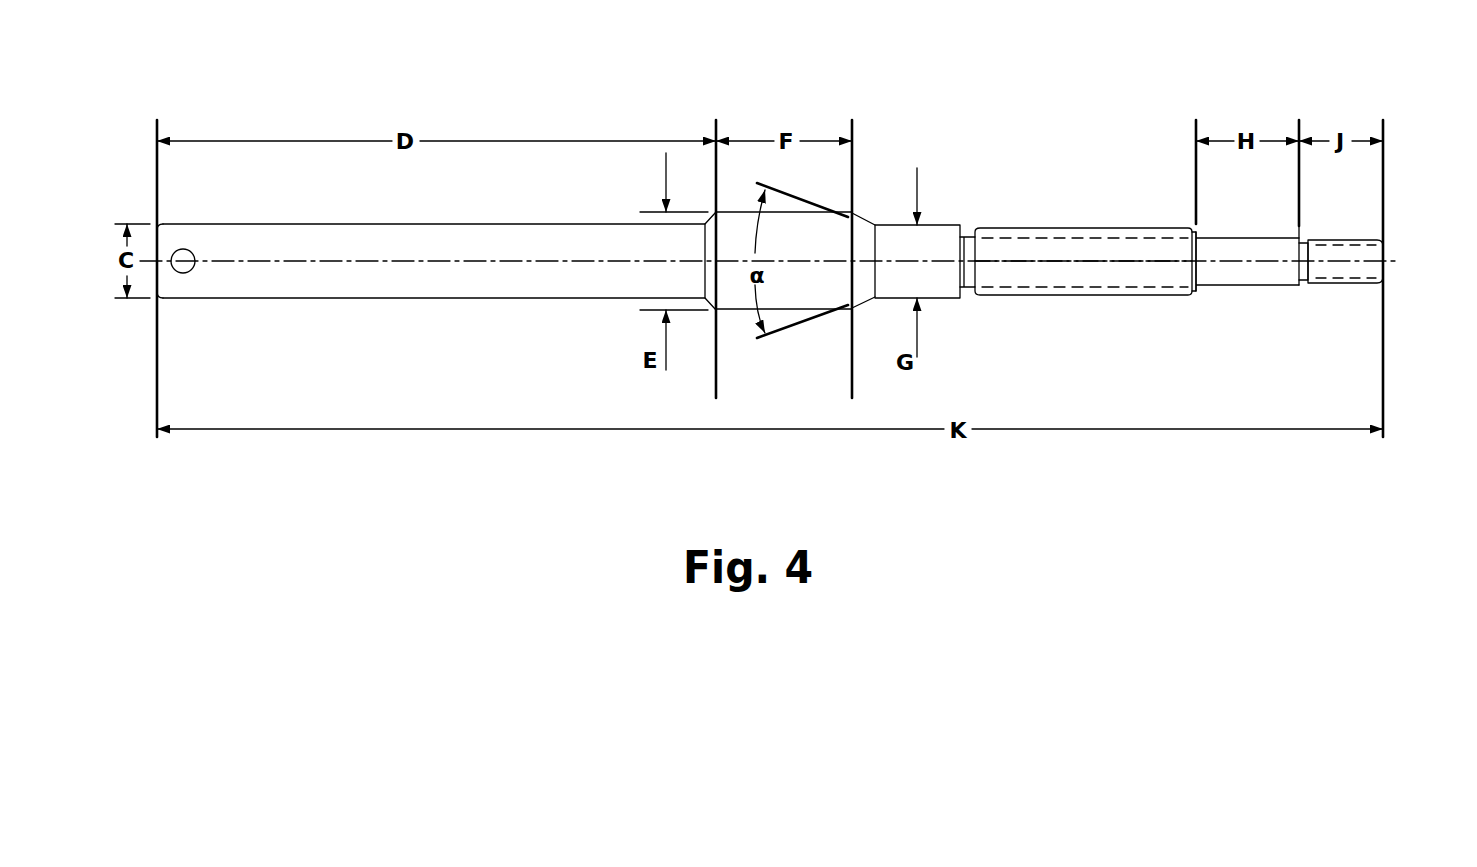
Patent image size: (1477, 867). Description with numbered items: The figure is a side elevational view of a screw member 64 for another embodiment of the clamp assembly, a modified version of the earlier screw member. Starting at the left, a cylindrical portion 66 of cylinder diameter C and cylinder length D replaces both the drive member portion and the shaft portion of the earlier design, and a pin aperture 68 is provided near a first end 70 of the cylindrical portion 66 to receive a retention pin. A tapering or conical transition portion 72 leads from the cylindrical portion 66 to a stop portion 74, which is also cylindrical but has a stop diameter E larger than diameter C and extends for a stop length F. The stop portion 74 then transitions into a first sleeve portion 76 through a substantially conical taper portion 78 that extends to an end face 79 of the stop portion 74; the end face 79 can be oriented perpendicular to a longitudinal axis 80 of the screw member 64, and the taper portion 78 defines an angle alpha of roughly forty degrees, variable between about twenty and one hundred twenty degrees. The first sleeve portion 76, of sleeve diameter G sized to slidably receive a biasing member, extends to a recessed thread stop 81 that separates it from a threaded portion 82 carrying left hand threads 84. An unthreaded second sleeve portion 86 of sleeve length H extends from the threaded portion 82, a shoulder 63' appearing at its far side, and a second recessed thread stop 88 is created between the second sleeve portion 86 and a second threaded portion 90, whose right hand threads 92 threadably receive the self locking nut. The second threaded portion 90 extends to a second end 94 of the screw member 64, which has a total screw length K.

The screw member 64 is at (677, 92).
The cylindrical portion 66 is at (340, 272).
The pin aperture 68 is at (190, 247).
The first end 70 is at (159, 274).
The transition portion 72 is at (708, 266).
The stop portion 74 is at (733, 297).
The first sleeve portion 76 is at (937, 283).
The taper portion 78 is at (868, 220).
The end face 79 is at (855, 303).
The longitudinal axis 80 is at (1027, 262).
The recessed thread stop 81 is at (968, 294).
The threaded portion 82 is at (1075, 293).
The left hand threads 84 is at (1063, 226).
The second sleeve portion 86 is at (1226, 272).
The shoulder 63' is at (1332, 229).
The second recessed thread stop 88 is at (1304, 286).
The second threaded portion 90 is at (1333, 268).
The right hand threads 92 is at (1353, 289).
The second end 94 is at (1386, 262).